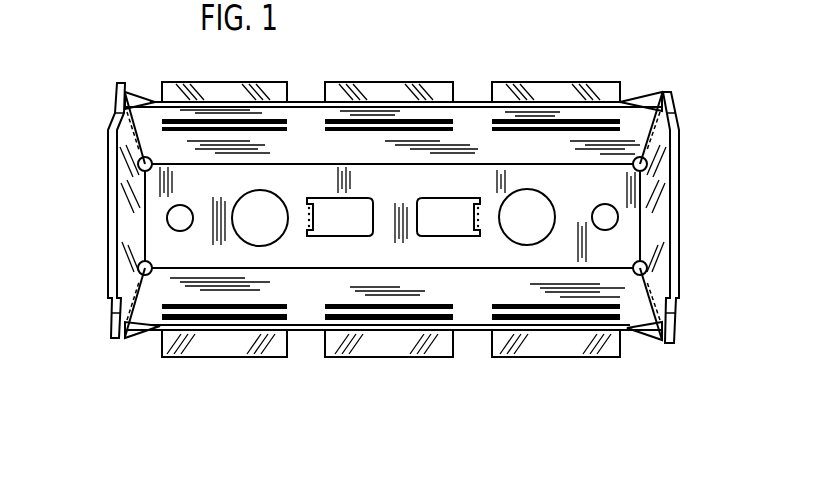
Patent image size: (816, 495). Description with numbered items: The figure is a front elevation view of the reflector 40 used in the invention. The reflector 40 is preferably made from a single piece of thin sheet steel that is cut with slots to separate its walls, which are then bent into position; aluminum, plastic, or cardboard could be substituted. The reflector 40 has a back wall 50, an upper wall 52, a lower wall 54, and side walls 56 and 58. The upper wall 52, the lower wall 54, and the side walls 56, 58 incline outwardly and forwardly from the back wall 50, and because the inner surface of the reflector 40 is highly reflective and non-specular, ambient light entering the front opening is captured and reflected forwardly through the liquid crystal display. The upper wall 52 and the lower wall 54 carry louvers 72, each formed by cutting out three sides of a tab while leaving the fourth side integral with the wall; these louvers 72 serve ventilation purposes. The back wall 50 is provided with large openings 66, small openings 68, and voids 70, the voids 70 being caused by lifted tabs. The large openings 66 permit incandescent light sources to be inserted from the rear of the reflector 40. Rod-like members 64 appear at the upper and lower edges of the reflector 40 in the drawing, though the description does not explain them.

The reflector 40 is at (690, 217).
The back wall 50 is at (586, 200).
The upper wall 52 is at (455, 96).
The lower wall 54 is at (463, 333).
The side wall 56 is at (122, 193).
The side wall 58 is at (679, 261).
The retaining rod clips 64 is at (138, 94).
The large openings 66 is at (268, 198).
The small openings 68 is at (167, 221).
The voids 70 is at (337, 237).
The louvers 72 is at (373, 88).